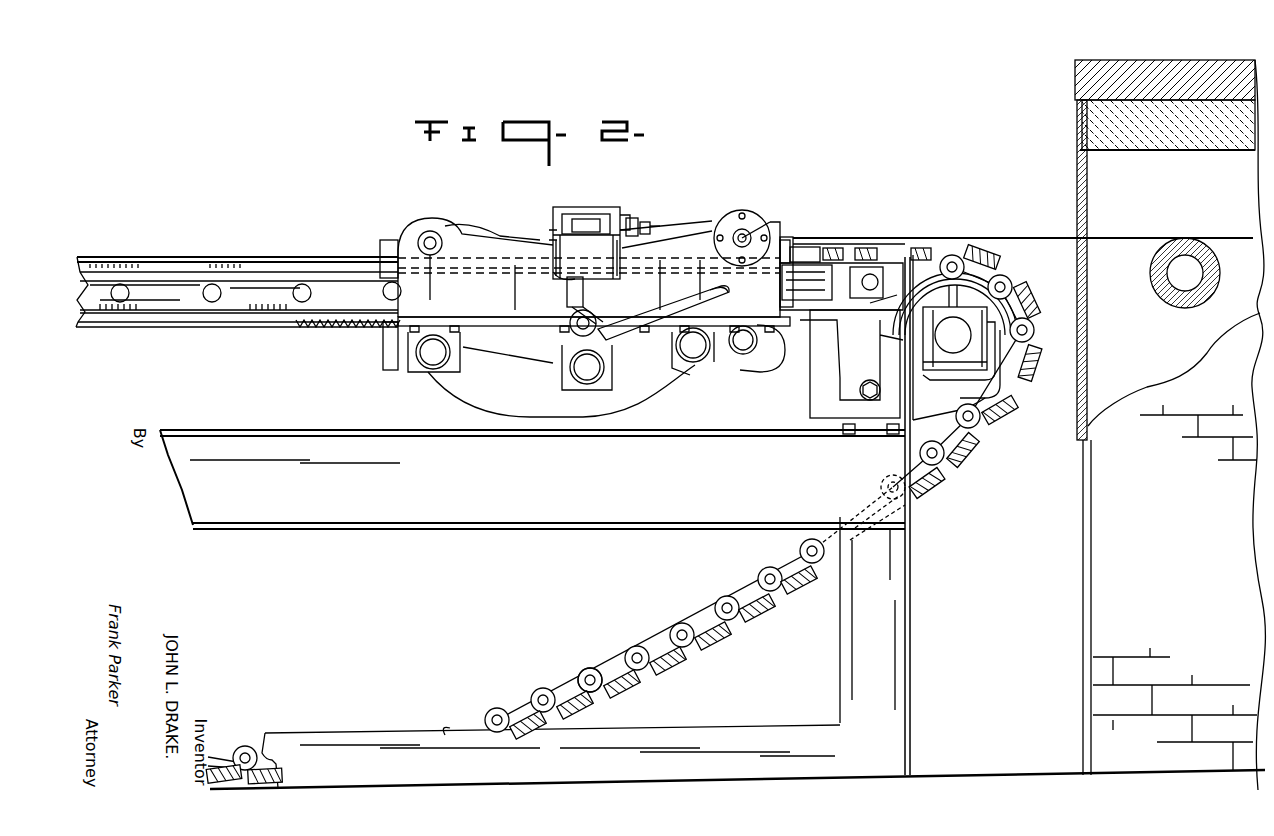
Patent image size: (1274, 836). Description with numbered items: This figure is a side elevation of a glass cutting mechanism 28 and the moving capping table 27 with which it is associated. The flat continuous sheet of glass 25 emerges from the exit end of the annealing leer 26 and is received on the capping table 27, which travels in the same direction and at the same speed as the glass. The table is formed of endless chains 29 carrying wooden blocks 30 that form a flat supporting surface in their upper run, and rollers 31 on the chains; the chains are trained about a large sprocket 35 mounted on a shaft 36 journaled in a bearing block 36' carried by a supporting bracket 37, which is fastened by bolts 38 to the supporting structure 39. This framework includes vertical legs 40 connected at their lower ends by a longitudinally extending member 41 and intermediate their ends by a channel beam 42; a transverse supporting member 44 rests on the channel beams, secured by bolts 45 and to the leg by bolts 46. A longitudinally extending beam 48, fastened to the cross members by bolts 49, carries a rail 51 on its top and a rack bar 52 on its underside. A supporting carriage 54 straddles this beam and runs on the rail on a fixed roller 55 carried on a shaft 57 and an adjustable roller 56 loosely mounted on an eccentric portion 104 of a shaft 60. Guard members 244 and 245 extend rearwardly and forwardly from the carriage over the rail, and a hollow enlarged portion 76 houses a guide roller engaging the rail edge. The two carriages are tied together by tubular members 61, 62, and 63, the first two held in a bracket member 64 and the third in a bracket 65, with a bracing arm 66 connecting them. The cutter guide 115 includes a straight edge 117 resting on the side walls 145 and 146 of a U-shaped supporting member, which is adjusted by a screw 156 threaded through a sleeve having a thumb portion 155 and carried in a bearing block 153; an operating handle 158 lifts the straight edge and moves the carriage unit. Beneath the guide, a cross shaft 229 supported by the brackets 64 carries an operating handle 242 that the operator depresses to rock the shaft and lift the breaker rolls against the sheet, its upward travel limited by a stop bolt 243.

The annealing leer 26 is at (1180, 66).
The flat continuous sheet of glass 25 is at (998, 237).
The sprocket 35 is at (930, 248).
The bolt 49 is at (875, 246).
The guard member 244 is at (815, 250).
The roller 56 is at (758, 220).
The shaft 60 is at (740, 225).
The cutting mechanism 28 is at (690, 226).
The screw 156 is at (650, 228).
The bearing block 153 is at (638, 222).
The side wall 146 is at (628, 215).
The cutter guide 115 is at (606, 214).
The operating handle 158 is at (585, 212).
The straight edge 117 is at (575, 207).
The side wall 145 is at (552, 230).
The supporting carriage 54 is at (478, 238).
The roller 55 is at (430, 228).
The shaft 57 is at (440, 244).
The guard member 245 is at (380, 252).
The rail 51 is at (330, 256).
The longitudinally extending beam 48 is at (320, 326).
The rack bar 52 is at (383, 336).
The hollow enlarged portion 76 is at (560, 280).
The bracket member 64 is at (482, 333).
The stop bolt 243 is at (595, 310).
The thumb portion 155 is at (634, 248).
The eccentric portion 104 is at (724, 292).
The operating handle 242 is at (708, 297).
The cross shaft 229 is at (570, 330).
The tubular member 61 is at (432, 374).
The tubular member 62 is at (590, 392).
The tubular member 63 is at (700, 372).
The bracket 65 is at (752, 372).
The bracing arm 66 is at (495, 390).
The supporting member 44 is at (835, 345).
The bolt 38 is at (930, 352).
The bolt 46 is at (858, 390).
The shaft 36 is at (1012, 313).
The bearing block 36' is at (979, 443).
The supporting bracket 37 is at (950, 408).
The bolt 45 is at (893, 436).
The capping table 27 is at (958, 450).
The channel beam 42 is at (470, 505).
The supporting structure 39 is at (912, 620).
The leg 40 is at (840, 668).
The endless chain 29 is at (710, 618).
The wooden block 30 is at (782, 595).
The roller 31 is at (596, 668).
The longitudinally extending member 41 is at (430, 735).